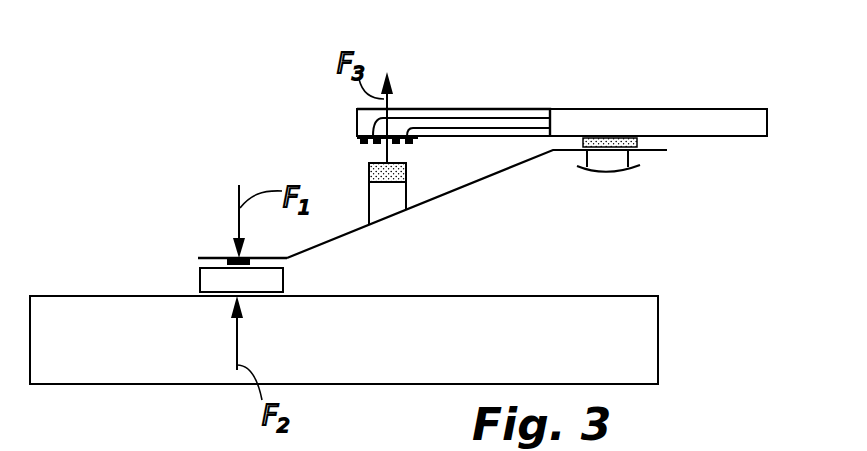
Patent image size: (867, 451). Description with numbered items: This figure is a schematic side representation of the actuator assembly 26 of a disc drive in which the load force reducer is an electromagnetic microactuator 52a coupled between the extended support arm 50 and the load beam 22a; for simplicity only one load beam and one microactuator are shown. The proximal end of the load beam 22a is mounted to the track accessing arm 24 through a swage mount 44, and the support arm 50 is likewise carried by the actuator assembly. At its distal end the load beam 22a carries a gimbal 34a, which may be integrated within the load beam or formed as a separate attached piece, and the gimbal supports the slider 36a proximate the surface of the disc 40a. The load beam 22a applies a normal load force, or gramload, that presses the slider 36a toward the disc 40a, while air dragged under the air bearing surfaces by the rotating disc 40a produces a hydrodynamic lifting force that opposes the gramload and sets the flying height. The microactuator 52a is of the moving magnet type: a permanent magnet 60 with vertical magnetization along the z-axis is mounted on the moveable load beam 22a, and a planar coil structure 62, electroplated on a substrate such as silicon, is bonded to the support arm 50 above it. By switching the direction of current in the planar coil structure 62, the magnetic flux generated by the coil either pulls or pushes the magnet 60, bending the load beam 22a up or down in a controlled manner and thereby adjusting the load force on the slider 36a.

The load beam 22a is at (418, 206).
The track accessing arm 24 is at (697, 110).
The actuator assembly 26 is at (652, 76).
The gimbal 34a is at (207, 258).
The slider 36a is at (195, 278).
The disc 40a is at (57, 384).
The swage mount 44 is at (665, 187).
The extended support arm 50 is at (480, 109).
The microactuator 52a is at (348, 157).
The permanent magnet 60 is at (407, 172).
The planar coil structure 62 is at (417, 141).